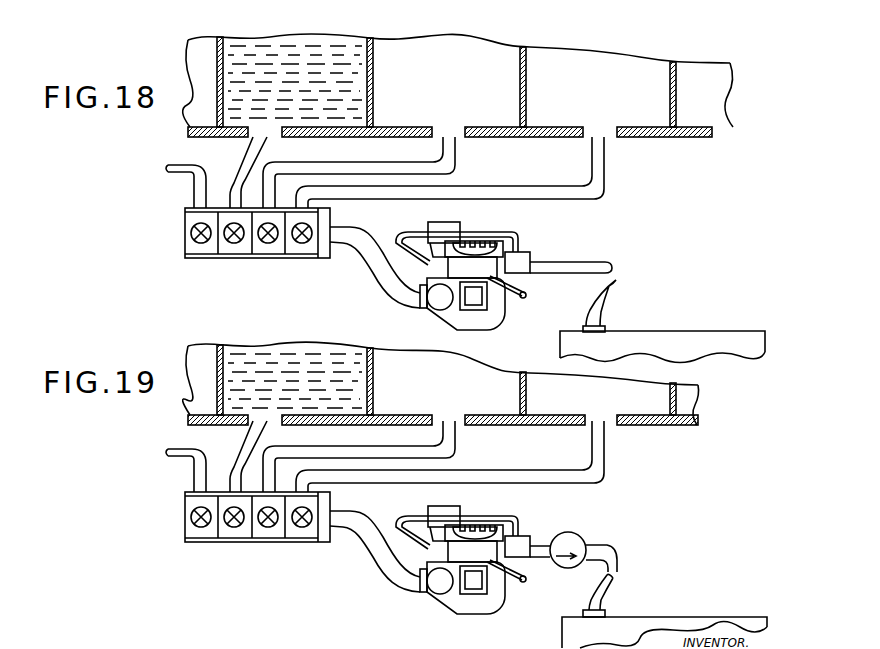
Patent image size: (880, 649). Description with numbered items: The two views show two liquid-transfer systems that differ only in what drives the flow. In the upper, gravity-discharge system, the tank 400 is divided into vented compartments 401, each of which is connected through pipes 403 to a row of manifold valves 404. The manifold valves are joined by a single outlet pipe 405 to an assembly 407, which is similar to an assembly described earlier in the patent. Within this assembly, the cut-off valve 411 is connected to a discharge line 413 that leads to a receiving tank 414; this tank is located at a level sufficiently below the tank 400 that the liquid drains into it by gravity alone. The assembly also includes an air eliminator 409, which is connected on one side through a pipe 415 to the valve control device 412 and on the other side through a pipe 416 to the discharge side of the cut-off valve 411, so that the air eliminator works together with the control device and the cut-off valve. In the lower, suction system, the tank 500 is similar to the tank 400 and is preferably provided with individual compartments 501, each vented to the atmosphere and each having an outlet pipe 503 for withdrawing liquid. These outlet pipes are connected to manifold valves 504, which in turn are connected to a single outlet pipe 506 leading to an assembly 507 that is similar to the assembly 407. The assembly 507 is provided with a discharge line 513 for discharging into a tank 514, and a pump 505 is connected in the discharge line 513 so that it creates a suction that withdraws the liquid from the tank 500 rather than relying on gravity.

In FIG. 18, the tank 400 is at (192, 134).
In FIG. 18, the compartments 401 is at (257, 60).
In FIG. 18, the pipes 403 is at (195, 183).
In FIG. 18, the manifold valves 404 is at (227, 266).
In FIG. 18, the outlet pipe 405 is at (378, 267).
In FIG. 18, the assembly 407 is at (490, 324).
In FIG. 18, the air eliminator 409 is at (452, 225).
In FIG. 18, the cut-off valve 411 is at (528, 258).
In FIG. 18, the valve control device 412 is at (527, 283).
In FIG. 18, the discharge line 413 is at (602, 302).
In FIG. 18, the tank 414 is at (730, 338).
In FIG. 18, the pipe 415 is at (410, 234).
In FIG. 18, the pipe 416 is at (518, 238).
In FIG. 19, the tank 500 is at (190, 420).
In FIG. 19, the compartments 501 is at (257, 366).
In FIG. 19, the outlet pipes 503 is at (192, 465).
In FIG. 19, the manifold valves 504 is at (231, 555).
In FIG. 19, the pump 505 is at (377, 548).
In FIG. 19, the outlet pipe 506 is at (578, 540).
In FIG. 19, the assembly 507 is at (490, 606).
In FIG. 19, the discharge line 513 is at (602, 588).
In FIG. 19, the tank 514 is at (698, 623).